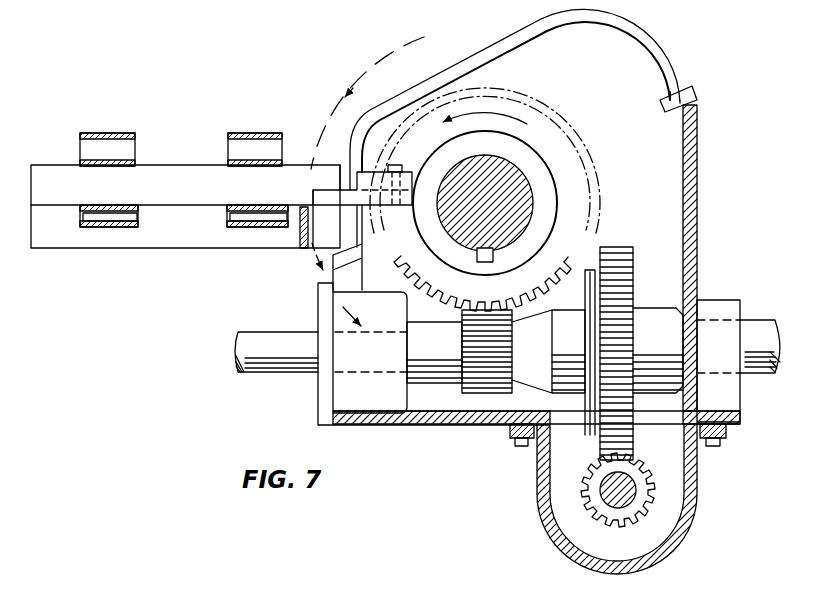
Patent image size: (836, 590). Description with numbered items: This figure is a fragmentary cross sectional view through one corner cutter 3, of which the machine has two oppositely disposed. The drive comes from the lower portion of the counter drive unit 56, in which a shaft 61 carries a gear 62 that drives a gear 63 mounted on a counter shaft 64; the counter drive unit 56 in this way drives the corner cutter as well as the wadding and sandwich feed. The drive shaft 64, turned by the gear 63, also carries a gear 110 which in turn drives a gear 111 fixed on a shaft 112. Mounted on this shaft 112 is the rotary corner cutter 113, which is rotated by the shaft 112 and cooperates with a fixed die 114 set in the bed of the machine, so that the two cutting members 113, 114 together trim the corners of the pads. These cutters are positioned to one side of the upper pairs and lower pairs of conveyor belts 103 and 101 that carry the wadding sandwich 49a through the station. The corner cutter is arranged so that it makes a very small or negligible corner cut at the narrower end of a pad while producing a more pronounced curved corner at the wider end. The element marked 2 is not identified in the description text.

The clamp member 2 is at (137, 130).
The corner cutter 3 is at (463, 58).
The wadding sandwich 49a is at (45, 175).
The counter drive unit 56 is at (535, 500).
The shaft 61 is at (637, 505).
The gear 62 is at (602, 511).
The gear 63 is at (636, 296).
The counter shaft 64 is at (765, 324).
The lower pairs of conveyor belts 101 is at (227, 218).
The upper pairs of conveyor belts 103 is at (228, 162).
The gear 110 is at (463, 392).
The gear 111 is at (494, 303).
The shaft 112 is at (523, 197).
The corner cutter 113 is at (332, 191).
The fixed die 114 is at (304, 250).